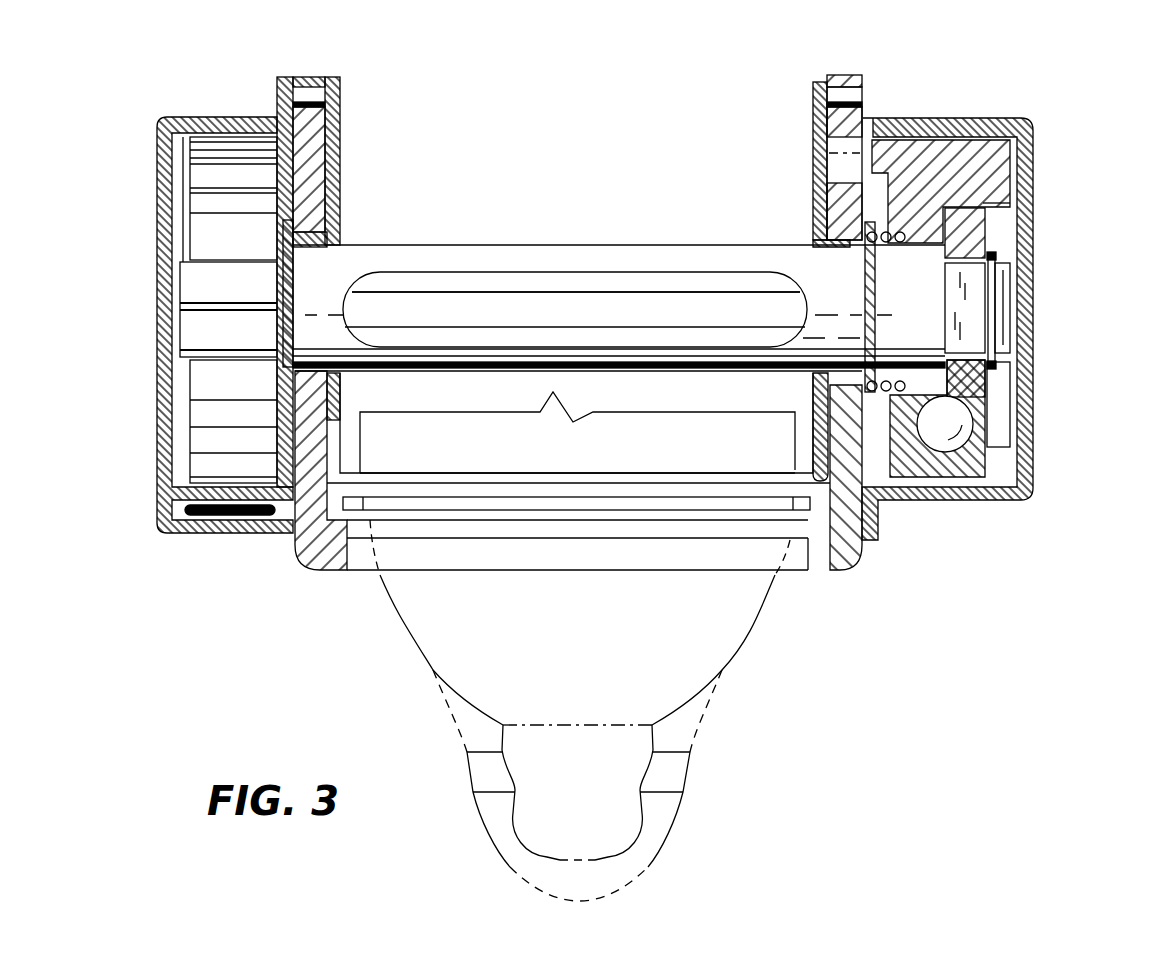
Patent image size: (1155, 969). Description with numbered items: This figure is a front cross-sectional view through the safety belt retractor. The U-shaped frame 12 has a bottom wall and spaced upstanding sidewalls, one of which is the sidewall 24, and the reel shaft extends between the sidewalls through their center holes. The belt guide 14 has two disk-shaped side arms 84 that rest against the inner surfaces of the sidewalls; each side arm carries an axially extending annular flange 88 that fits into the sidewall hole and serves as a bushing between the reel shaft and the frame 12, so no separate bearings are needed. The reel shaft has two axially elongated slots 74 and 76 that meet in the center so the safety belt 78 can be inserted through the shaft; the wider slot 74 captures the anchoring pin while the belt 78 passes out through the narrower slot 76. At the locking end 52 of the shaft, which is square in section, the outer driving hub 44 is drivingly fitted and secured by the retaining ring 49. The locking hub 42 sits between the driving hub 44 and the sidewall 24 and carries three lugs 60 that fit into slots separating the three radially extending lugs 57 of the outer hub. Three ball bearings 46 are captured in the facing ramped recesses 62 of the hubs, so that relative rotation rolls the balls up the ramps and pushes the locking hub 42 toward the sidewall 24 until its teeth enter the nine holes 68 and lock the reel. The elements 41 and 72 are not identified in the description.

The U-shaped frame 12 is at (835, 572).
The belt guide 14 is at (405, 522).
The sidewall 24 is at (840, 123).
The left knob cap 41 is at (317, 75).
The locking hub 42 is at (950, 150).
The outer driving hub 44 is at (977, 228).
The ball bearings 46 is at (930, 437).
The retaining ring 49 is at (995, 256).
The locking end 52 is at (975, 305).
The lugs 57 is at (985, 462).
The lugs 60 is at (1010, 172).
The recesses 62 is at (405, 245).
The holes 68 is at (835, 168).
The right knob cap 72 is at (850, 75).
The slot 74 is at (637, 275).
The slot 76 is at (523, 297).
The safety belt 78 is at (405, 635).
The side arms 84 is at (835, 142).
The annular flange 88 is at (815, 245).